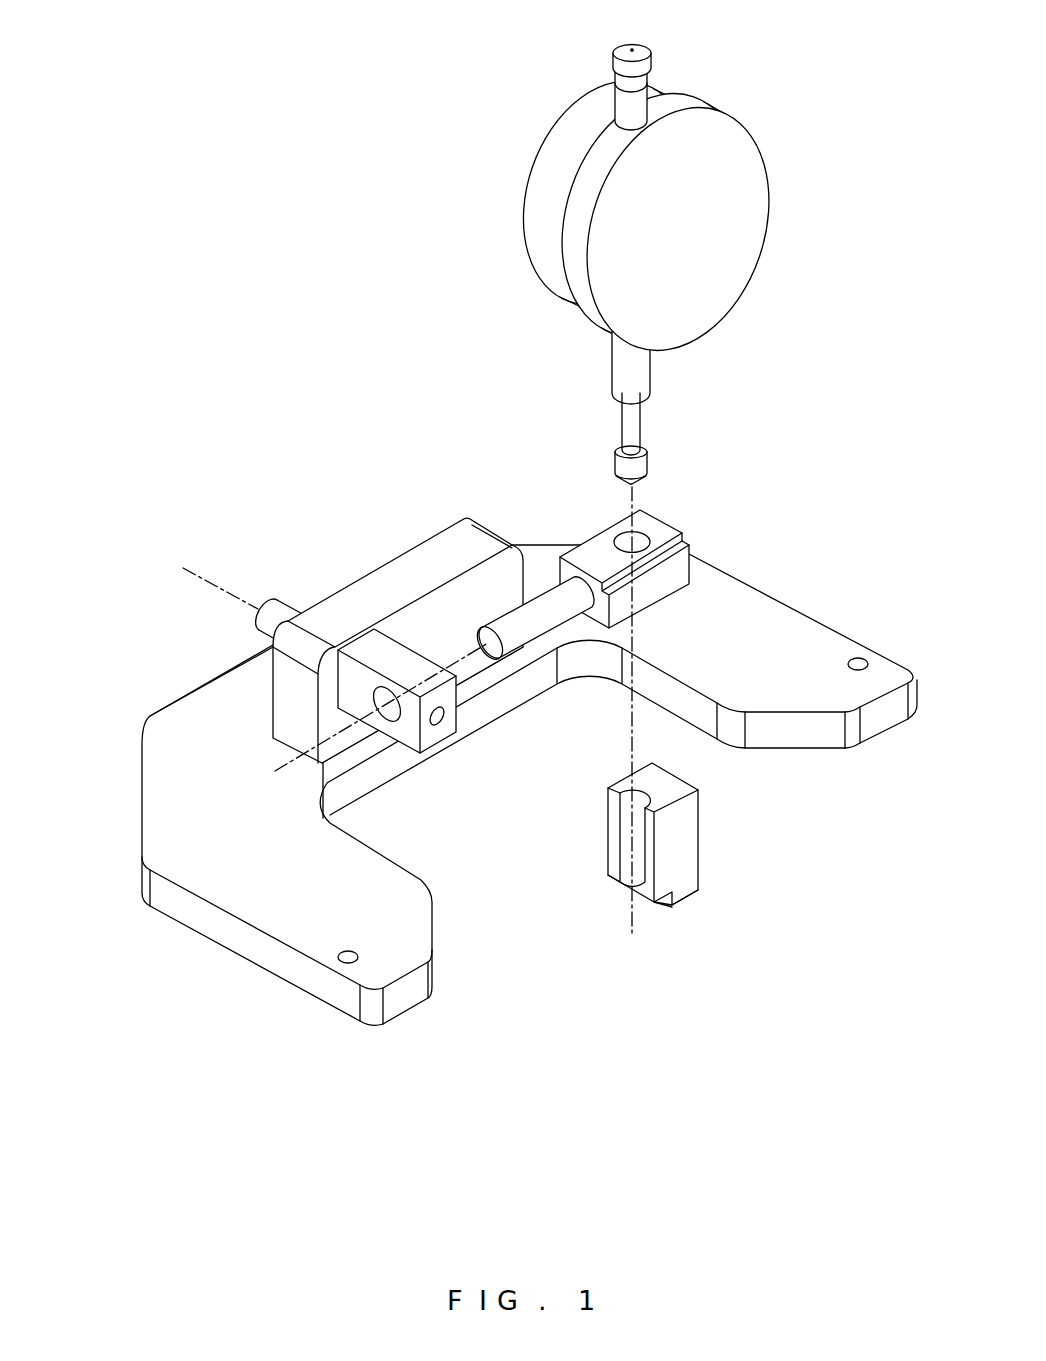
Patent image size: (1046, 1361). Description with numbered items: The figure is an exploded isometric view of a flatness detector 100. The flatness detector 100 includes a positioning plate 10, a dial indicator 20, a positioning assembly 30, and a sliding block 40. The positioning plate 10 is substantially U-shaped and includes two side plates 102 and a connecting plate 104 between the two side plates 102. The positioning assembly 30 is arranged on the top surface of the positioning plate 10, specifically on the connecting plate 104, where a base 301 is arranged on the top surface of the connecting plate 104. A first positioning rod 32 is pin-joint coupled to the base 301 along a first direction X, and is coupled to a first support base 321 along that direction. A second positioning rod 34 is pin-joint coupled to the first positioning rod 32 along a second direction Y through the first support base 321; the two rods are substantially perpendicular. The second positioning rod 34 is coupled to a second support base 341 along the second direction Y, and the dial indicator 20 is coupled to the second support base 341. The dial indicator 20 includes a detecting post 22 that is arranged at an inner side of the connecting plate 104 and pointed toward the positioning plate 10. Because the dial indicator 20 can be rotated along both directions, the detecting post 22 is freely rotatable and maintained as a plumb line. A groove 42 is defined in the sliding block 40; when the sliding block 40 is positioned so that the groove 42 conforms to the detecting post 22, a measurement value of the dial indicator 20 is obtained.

The flatness detector 100 is at (500, 520).
The positioning plate 10 is at (500, 789).
The side plate 102 is at (318, 935).
The connecting plate 104 is at (258, 663).
The dial indicator 20 is at (667, 275).
The detecting post 22 is at (637, 466).
The positioning assembly 30 is at (475, 609).
The base 301 is at (290, 705).
The first positioning rod 32 is at (272, 603).
The first support base 321 is at (388, 652).
The second positioning rod 34 is at (510, 622).
The second support base 341 is at (672, 575).
The sliding block 40 is at (660, 835).
The groove 42 is at (630, 843).